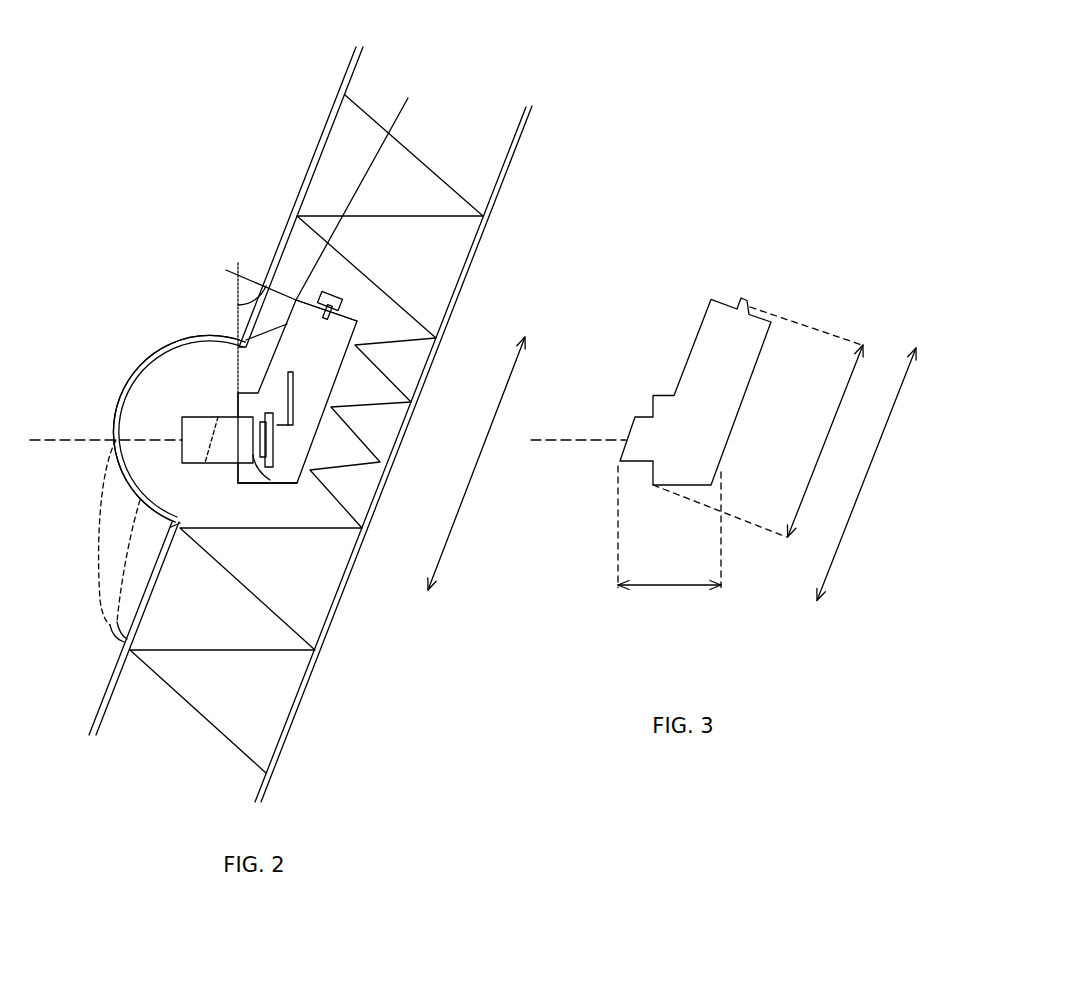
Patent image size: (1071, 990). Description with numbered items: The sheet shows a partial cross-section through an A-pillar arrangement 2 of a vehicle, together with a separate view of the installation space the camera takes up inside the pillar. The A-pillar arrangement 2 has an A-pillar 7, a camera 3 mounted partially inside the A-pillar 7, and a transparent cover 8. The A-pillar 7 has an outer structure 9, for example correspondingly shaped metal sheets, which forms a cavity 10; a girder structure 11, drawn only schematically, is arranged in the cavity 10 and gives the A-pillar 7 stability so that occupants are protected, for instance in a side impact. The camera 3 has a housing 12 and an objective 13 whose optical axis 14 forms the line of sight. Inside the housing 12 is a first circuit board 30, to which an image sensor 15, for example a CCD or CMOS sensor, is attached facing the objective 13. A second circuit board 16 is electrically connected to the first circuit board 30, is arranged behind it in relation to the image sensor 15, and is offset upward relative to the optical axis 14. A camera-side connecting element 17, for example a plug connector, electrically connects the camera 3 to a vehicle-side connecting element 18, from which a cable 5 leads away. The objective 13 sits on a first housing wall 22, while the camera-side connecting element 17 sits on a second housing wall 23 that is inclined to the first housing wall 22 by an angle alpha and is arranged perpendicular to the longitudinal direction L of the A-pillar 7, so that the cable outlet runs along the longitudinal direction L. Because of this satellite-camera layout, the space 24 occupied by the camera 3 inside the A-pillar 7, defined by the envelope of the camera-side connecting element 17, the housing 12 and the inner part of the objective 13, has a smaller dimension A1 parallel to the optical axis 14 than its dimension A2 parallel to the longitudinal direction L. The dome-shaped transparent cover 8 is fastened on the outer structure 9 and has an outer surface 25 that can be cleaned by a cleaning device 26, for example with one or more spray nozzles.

In FIG. 2, the A-pillar arrangement 2 is at (127, 104).
In FIG. 2, the camera 3 is at (246, 338).
In FIG. 2, the cable 5 is at (404, 110).
In FIG. 2, the A-pillar 7 is at (327, 122).
In FIG. 2, the transparent cover 8 is at (130, 378).
In FIG. 2, the outer structure 9 is at (347, 68).
In FIG. 2, the cavity 10 is at (526, 107).
In FIG. 2, the girder structure 11 is at (366, 98).
In FIG. 2, the housing 12 is at (266, 277).
In FIG. 2, the objective 13 is at (202, 417).
In FIG. 2, the optical axis 14 is at (60, 440).
In FIG. 3, the optical axis 14 is at (547, 440).
In FIG. 2, the image sensor 15 is at (253, 457).
In FIG. 2, the second circuit board 16 is at (293, 390).
In FIG. 2, the camera-side connecting element 17 is at (345, 314).
In FIG. 2, the vehicle-side connecting element 18 is at (343, 295).
In FIG. 2, the first housing wall 22 is at (238, 482).
In FIG. 2, the second housing wall 23 is at (312, 302).
In FIG. 2, the space 24 is at (257, 485).
In FIG. 3, the space 24 is at (691, 347).
In FIG. 2, the outer surface 25 is at (115, 410).
In FIG. 2, the cleaning device 26 is at (124, 640).
In FIG. 2, the first circuit board 30 is at (273, 452).
In FIG. 2, the longitudinal direction L is at (461, 505).
In FIG. 3, the longitudinal direction L is at (885, 428).
In FIG. 3, the dimension parallel to line of sight A1 is at (657, 586).
In FIG. 3, the dimension parallel to longitudinal direction A2 is at (840, 406).